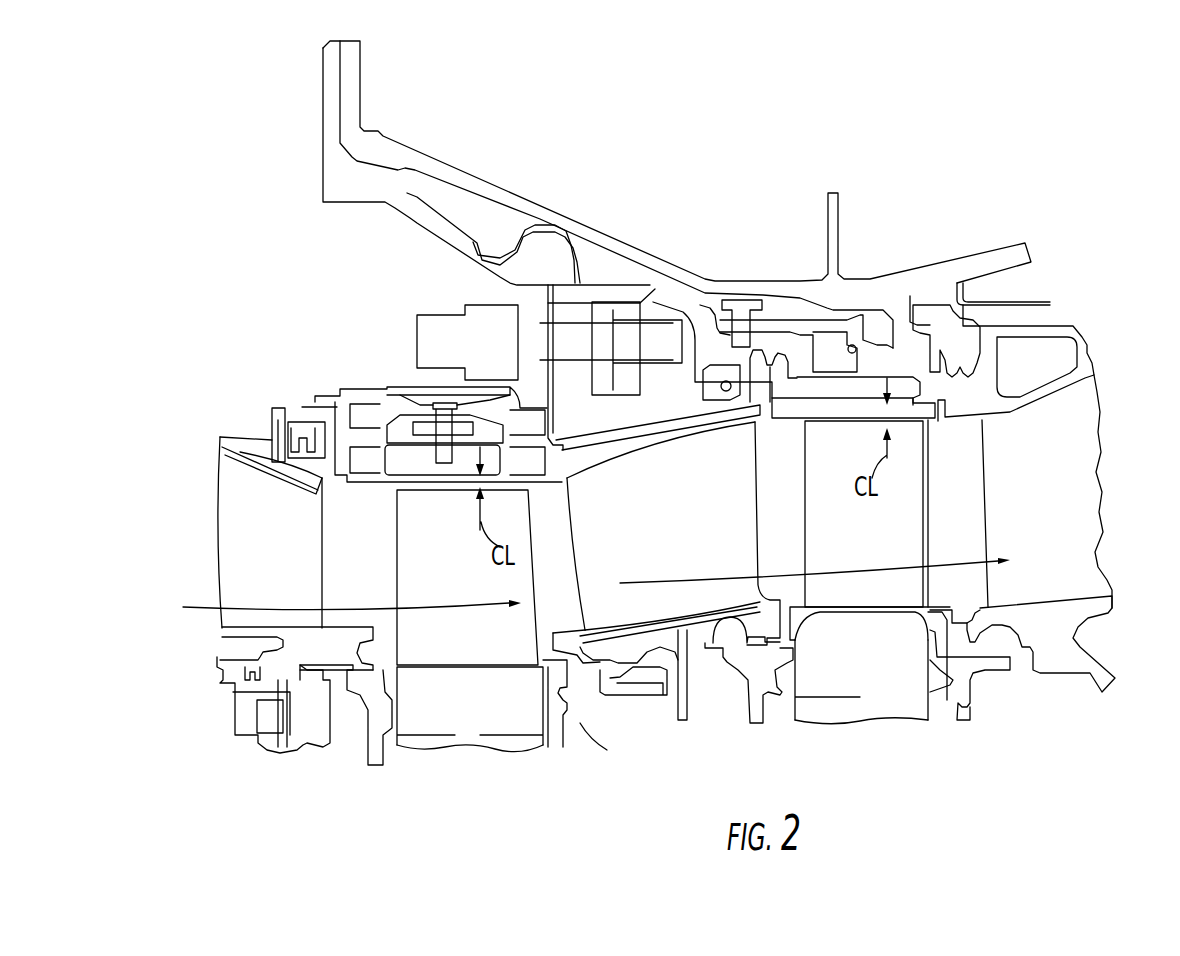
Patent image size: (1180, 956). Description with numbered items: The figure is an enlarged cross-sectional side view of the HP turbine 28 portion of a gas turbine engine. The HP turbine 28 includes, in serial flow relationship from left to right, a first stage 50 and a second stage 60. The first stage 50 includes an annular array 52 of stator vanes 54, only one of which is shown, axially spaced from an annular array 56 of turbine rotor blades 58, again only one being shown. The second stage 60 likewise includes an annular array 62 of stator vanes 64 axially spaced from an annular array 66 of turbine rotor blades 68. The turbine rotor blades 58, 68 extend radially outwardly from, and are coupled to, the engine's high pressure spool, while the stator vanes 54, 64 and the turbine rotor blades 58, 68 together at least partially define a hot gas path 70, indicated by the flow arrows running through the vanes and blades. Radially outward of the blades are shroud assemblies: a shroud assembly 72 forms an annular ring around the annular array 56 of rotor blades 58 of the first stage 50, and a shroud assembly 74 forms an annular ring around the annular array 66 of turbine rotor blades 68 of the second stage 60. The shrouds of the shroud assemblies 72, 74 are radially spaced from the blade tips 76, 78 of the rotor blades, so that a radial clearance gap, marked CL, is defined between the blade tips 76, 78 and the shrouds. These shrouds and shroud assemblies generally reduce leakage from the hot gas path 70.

The HP turbine 28 is at (786, 150).
The first stage 50 is at (351, 797).
The annular array of stator vanes 52 is at (259, 539).
The stator vane 54 is at (282, 560).
The annular array of turbine rotor blades 56 is at (445, 577).
The turbine rotor blade 58 is at (470, 595).
The second stage 60 is at (694, 771).
The annular array of stator vanes 62 is at (662, 534).
The stator vane 64 is at (682, 539).
The annular array of turbine rotor blades 66 is at (952, 572).
The turbine rotor blade 68 is at (878, 553).
The hot gas path 70 is at (207, 607).
The shroud assembly 72 is at (354, 370).
The shroud assembly 74 is at (886, 350).
The blade tip 76 is at (431, 492).
The blade tip 78 is at (862, 428).